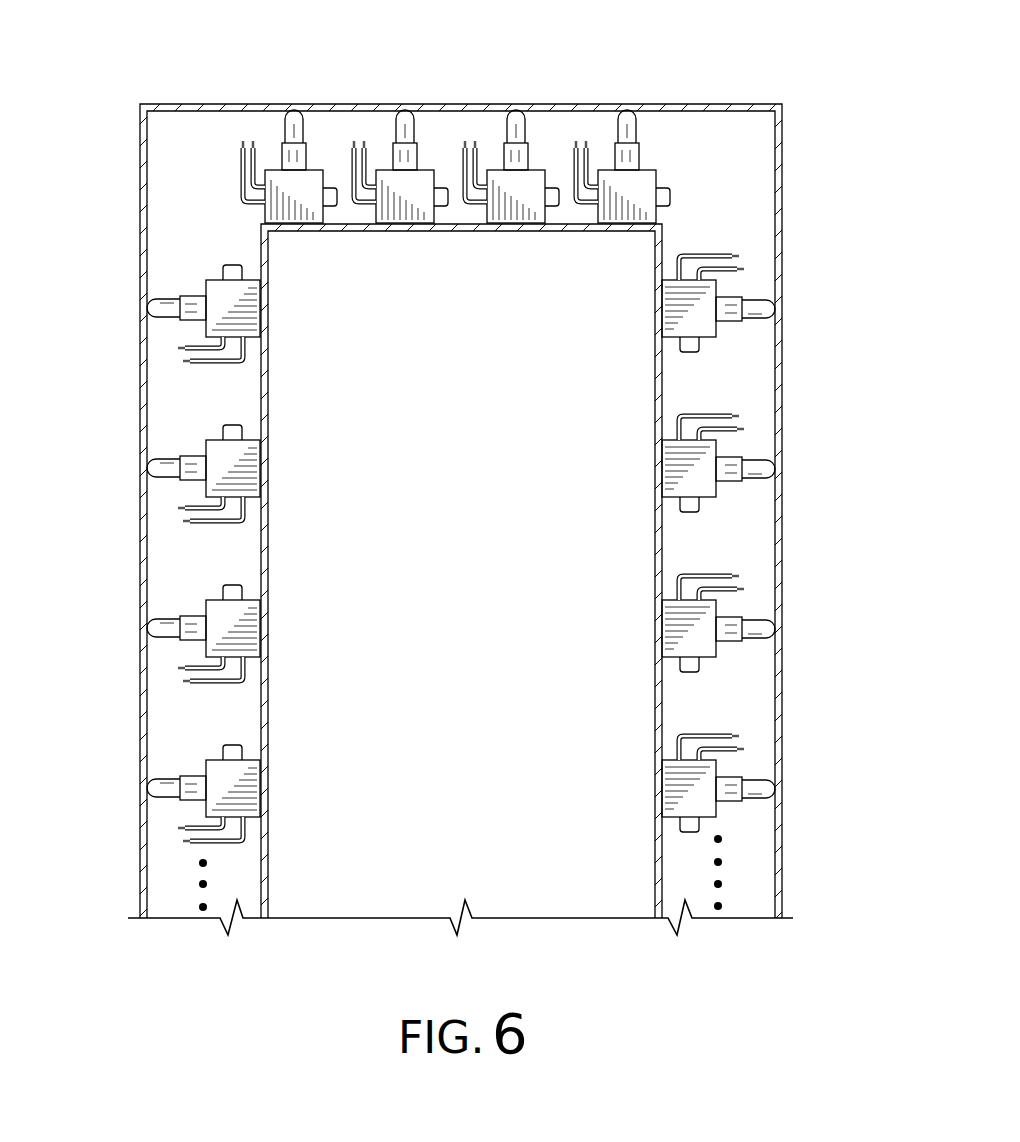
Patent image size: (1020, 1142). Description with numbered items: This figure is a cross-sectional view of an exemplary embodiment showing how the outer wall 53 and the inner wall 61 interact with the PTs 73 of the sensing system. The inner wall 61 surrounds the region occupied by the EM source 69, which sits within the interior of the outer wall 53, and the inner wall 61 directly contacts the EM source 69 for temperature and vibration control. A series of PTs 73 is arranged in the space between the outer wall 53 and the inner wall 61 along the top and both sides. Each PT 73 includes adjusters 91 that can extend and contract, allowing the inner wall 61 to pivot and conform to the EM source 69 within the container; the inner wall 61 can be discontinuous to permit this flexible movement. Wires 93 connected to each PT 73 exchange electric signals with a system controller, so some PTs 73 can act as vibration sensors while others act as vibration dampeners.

The outer wall 53 is at (140, 200).
The inner wall 61 is at (268, 365).
The EM source 69 is at (482, 574).
The PT 73 is at (437, 170).
The adjusters 91 is at (767, 469).
The wires 93 is at (708, 735).